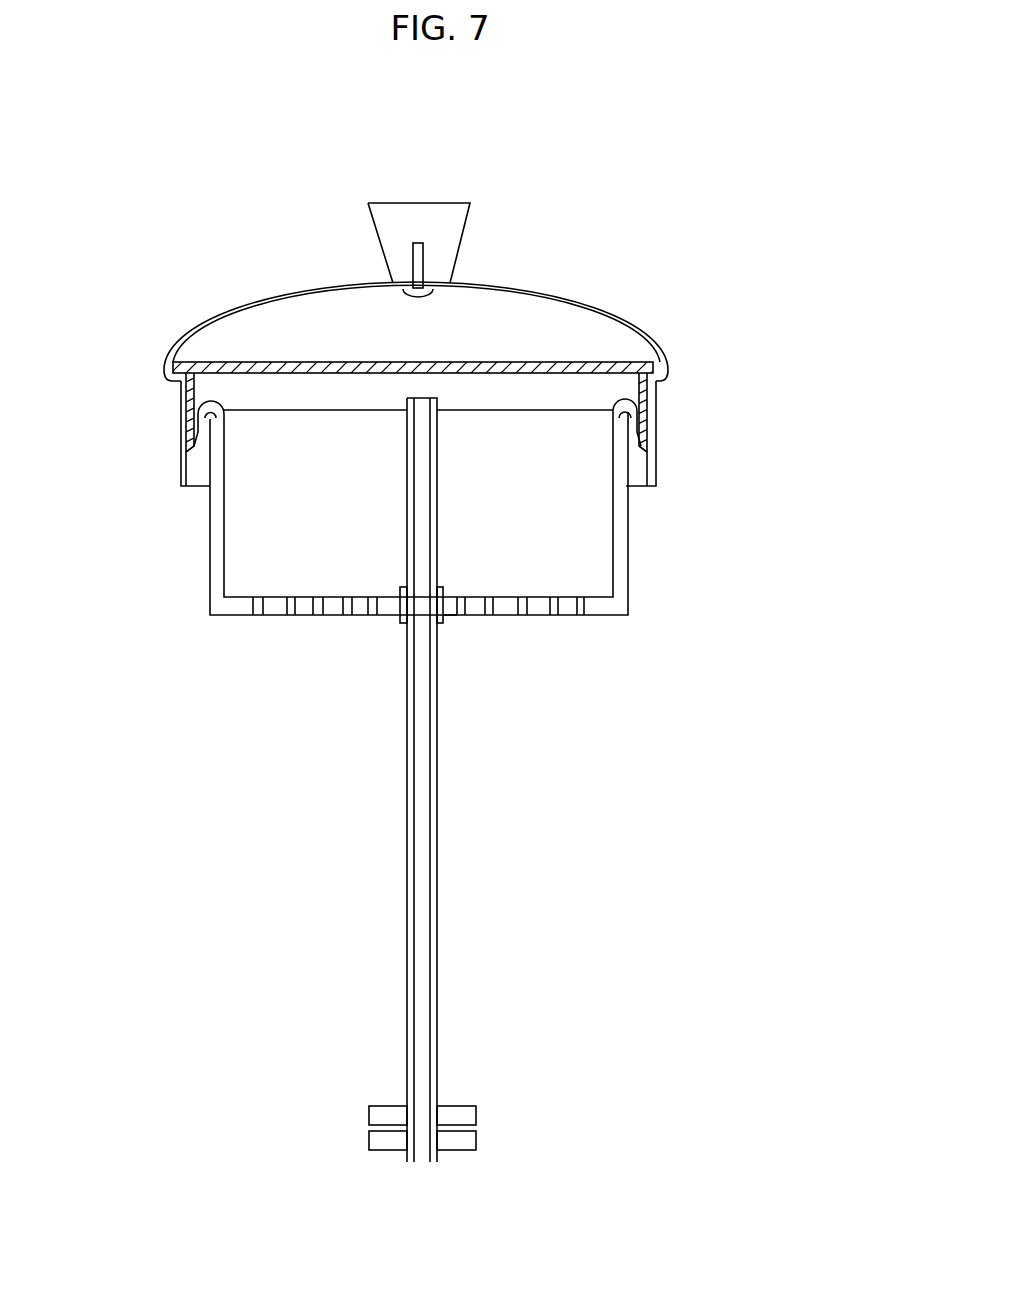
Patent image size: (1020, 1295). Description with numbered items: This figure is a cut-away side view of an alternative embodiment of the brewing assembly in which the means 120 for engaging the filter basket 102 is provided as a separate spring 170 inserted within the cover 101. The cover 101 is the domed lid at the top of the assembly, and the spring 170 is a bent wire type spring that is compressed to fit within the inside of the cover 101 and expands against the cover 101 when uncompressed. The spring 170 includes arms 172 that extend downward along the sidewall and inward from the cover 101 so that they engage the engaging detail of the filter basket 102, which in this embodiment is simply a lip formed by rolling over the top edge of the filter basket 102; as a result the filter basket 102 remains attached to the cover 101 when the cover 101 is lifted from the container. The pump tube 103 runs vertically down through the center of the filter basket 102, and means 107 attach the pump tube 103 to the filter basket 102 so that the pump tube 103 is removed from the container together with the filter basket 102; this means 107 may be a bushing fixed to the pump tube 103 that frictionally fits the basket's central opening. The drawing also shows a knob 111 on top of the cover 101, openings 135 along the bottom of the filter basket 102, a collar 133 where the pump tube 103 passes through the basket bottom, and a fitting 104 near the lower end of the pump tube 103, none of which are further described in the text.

The cover 101 is at (255, 297).
The handle / knob 111 is at (450, 230).
The spring 170 is at (573, 365).
The arms 172 is at (643, 423).
The means for engaging the filter basket 120 is at (638, 467).
The filter basket 102 is at (620, 598).
The slots 135 is at (288, 607).
The bushing 133 is at (397, 603).
The means for attaching the pump tube to the filter basket 107 is at (440, 620).
The pump tube 103 is at (435, 886).
The weights / nuts 104 is at (378, 1112).